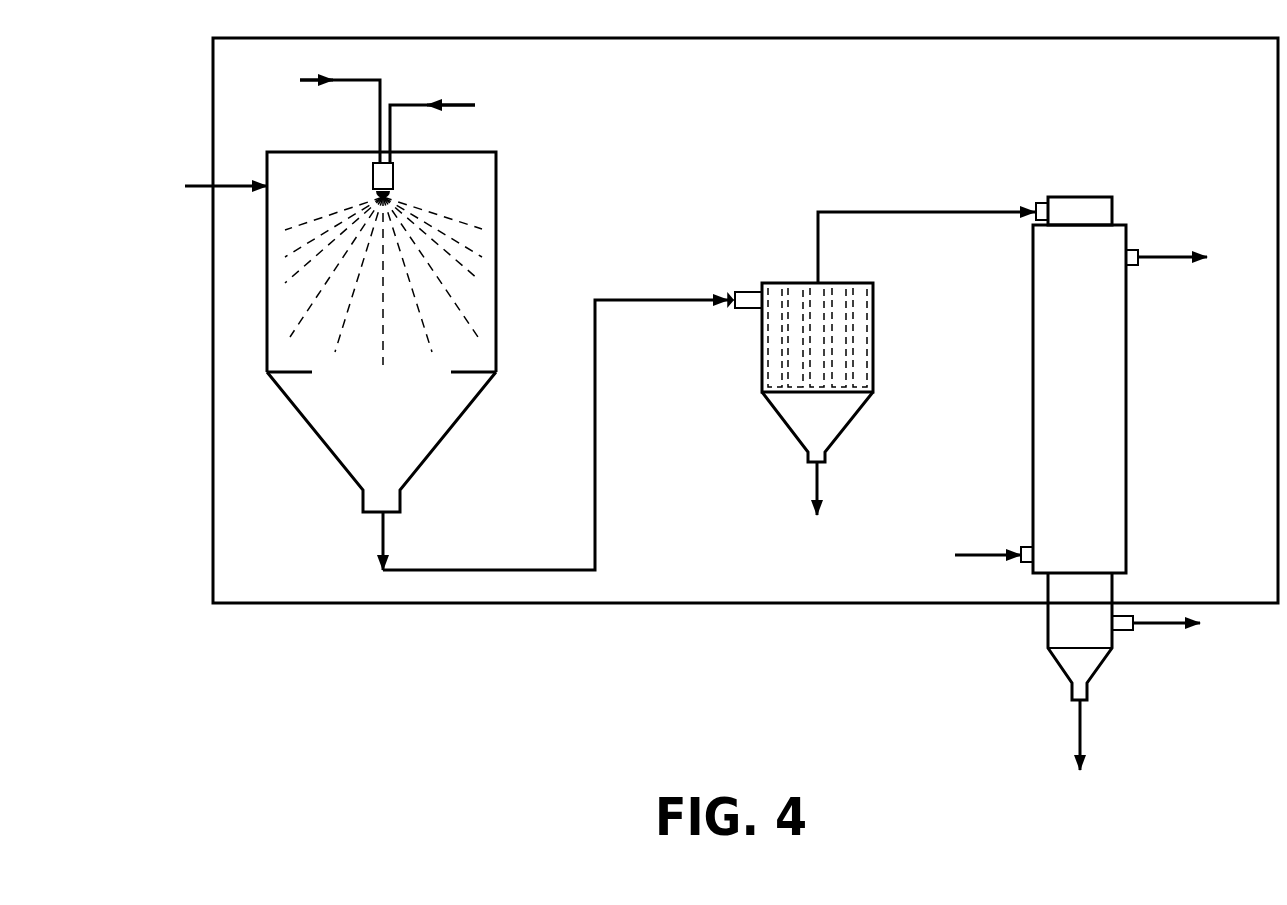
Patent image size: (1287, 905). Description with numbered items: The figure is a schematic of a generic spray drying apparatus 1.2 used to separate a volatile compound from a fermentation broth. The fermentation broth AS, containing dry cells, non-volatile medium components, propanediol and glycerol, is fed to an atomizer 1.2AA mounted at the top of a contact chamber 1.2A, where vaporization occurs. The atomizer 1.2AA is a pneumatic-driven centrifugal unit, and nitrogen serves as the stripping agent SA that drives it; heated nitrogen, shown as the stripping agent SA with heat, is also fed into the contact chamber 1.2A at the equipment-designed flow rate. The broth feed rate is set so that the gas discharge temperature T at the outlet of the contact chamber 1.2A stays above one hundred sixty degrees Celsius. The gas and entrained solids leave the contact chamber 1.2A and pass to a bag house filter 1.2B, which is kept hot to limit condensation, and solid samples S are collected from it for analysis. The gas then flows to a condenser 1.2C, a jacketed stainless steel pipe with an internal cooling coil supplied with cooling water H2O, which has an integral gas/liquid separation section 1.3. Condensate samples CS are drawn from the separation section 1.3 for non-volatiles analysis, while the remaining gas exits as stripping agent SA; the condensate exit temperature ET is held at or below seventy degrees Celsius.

The spray drying apparatus 1.2 is at (775, 36).
The contact chamber 1.2A is at (497, 162).
The atomizer 1.2AA is at (373, 176).
The bag house filter 1.2B is at (784, 424).
The condenser 1.2C is at (1128, 402).
The gas/liquid separation section 1.3 is at (1100, 667).
The gas discharge temperature T is at (375, 500).
The condensate exit temperature ET is at (1153, 626).
The fermentation broth AS is at (297, 82).
The stripping agent SA is at (677, 364).
The solid samples S is at (818, 507).
The cooling water H2O is at (1080, 409).
The condensate samples CS is at (1080, 750).